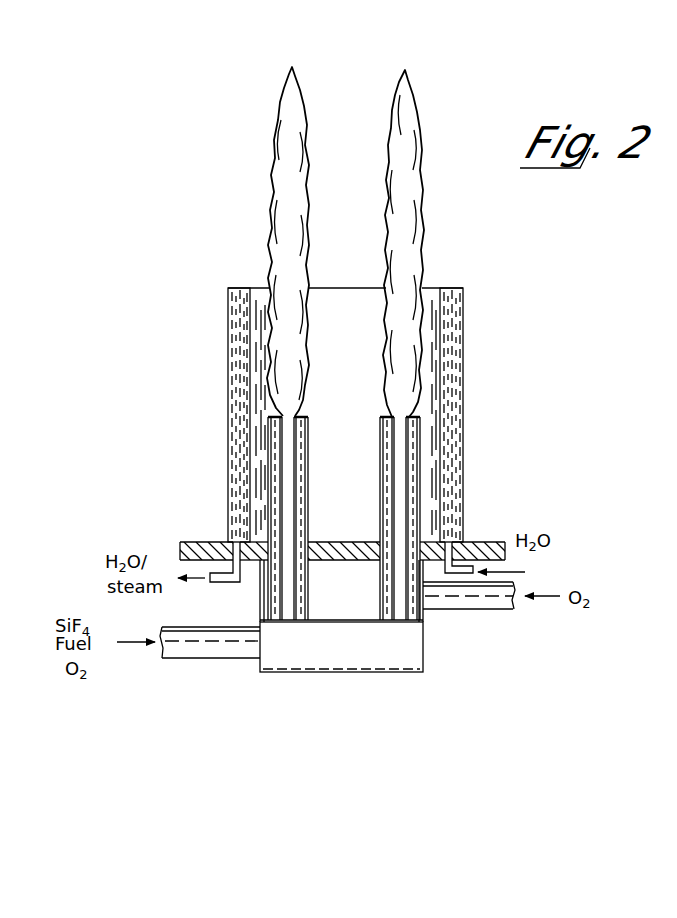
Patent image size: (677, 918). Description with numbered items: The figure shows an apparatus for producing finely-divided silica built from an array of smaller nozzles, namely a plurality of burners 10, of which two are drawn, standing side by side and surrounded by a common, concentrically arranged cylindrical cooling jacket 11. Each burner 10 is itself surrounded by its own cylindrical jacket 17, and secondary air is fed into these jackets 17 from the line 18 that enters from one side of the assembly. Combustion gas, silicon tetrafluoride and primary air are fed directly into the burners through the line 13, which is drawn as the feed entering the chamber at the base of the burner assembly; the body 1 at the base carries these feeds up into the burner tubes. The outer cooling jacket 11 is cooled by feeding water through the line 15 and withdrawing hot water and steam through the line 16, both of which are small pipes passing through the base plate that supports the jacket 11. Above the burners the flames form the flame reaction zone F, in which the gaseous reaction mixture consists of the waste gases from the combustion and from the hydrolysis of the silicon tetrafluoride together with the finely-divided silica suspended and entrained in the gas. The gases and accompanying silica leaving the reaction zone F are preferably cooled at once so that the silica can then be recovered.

The burner body / combustion chamber 1 is at (354, 566).
The burners 10 is at (344, 518).
The cylindrical cooling jacket 11 is at (228, 360).
The line 13 is at (300, 673).
The line 15 is at (527, 568).
The line 16 is at (202, 581).
The cylindrical jackets 17 is at (379, 511).
The line 18 is at (489, 608).
The flame reaction zone F is at (393, 178).